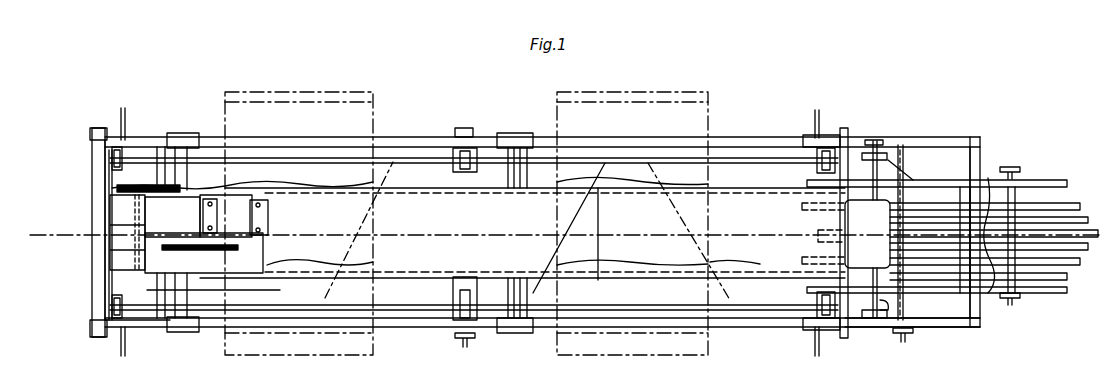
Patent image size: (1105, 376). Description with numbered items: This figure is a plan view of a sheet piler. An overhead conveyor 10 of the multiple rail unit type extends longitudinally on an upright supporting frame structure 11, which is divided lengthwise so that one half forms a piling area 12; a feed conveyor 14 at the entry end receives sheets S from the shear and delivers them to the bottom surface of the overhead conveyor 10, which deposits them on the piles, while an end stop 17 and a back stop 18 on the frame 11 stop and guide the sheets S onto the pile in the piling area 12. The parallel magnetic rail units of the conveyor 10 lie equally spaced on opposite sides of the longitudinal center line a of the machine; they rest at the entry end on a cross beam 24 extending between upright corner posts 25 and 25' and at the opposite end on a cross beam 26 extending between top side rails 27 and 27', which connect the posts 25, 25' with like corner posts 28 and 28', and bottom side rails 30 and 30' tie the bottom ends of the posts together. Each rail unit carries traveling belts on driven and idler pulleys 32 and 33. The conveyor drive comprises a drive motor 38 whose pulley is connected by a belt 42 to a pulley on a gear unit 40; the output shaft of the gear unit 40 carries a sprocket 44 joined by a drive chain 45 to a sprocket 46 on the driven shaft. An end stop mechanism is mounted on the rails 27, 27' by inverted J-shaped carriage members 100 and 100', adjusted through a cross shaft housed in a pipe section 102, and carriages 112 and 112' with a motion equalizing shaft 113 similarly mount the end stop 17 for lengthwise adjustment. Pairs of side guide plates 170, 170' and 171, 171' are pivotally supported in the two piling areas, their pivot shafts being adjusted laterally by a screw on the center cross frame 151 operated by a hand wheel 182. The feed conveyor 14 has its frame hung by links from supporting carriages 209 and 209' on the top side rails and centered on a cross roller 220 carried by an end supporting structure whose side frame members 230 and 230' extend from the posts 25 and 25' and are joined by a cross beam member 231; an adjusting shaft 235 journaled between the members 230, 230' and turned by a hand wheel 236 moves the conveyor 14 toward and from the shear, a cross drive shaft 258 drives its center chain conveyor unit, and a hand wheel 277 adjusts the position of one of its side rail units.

The overhead conveyor 10 is at (738, 272).
The upright supporting frame structure 11 is at (93, 320).
The piling area 12 is at (420, 305).
The feed conveyor 14 is at (989, 296).
The end stop 17 is at (665, 358).
The back stop 18 is at (315, 358).
The cross beam 24 is at (846, 158).
The corner post 25 is at (835, 348).
The corner post 25' is at (837, 122).
The cross beam 26 is at (160, 150).
The top side rail 27 is at (139, 341).
The top side rail 27' is at (121, 111).
The corner post 28 is at (77, 337).
The corner post 28' is at (78, 121).
The bottom side rail 30 is at (904, 213).
The bottom side rail 30' is at (74, 229).
The driven pulley 32 is at (123, 211).
The idler pulley 33 is at (847, 217).
The drive motor 38 is at (243, 217).
The gear unit 40 is at (213, 185).
The belt 42 is at (200, 257).
The sprocket 44 is at (170, 150).
The drive chain 45 is at (148, 196).
The sprocket 46 is at (115, 185).
The carriage forming member 100 is at (189, 316).
The carriage forming member 100' is at (193, 123).
The pipe section 102 is at (193, 290).
The carriage 112 is at (518, 341).
The carriage 112' is at (496, 126).
The motion equalizing shaft 113 is at (517, 279).
The center cross frame 151 is at (475, 290).
The side guide plate 170 is at (474, 276).
The side guide plate 170' is at (474, 192).
The side guide plate 171 is at (771, 328).
The side guide plate 171' is at (777, 141).
The hand wheel 182 is at (473, 349).
The supporting carriage 209 is at (803, 345).
The supporting carriage 209' is at (802, 124).
The cross roller 220 is at (960, 273).
The side frame member 230 is at (916, 339).
The side frame member 230' is at (910, 141).
The cross beam member 231 is at (975, 157).
The adjusting shaft 235 is at (905, 157).
The hand wheel 236 is at (906, 351).
The cross drive shaft 258 is at (917, 291).
The hand wheel 277 is at (1016, 302).
The sheets S is at (704, 228).
The longitudinal center line a is at (559, 236).